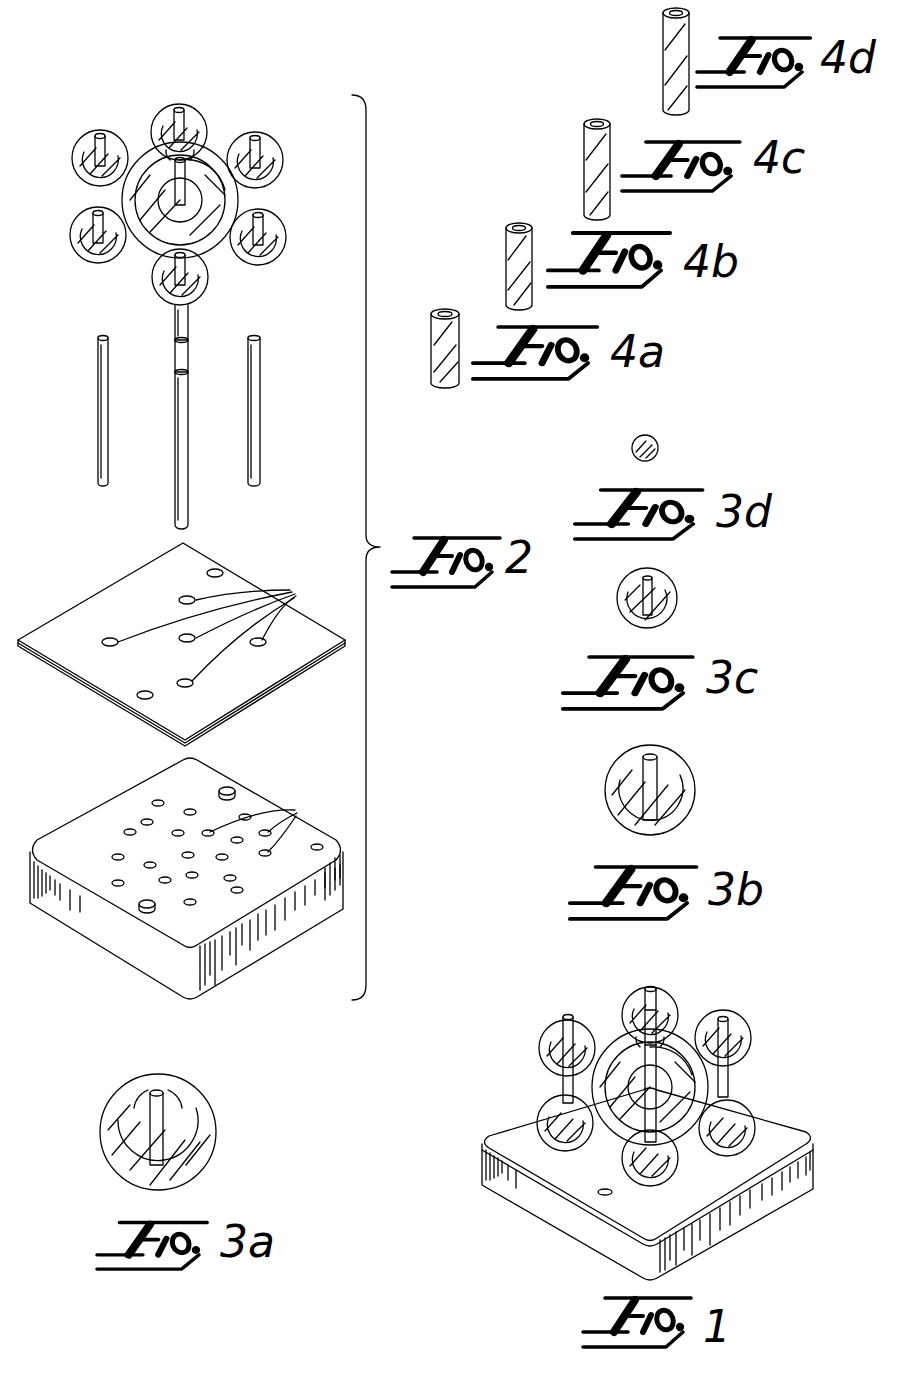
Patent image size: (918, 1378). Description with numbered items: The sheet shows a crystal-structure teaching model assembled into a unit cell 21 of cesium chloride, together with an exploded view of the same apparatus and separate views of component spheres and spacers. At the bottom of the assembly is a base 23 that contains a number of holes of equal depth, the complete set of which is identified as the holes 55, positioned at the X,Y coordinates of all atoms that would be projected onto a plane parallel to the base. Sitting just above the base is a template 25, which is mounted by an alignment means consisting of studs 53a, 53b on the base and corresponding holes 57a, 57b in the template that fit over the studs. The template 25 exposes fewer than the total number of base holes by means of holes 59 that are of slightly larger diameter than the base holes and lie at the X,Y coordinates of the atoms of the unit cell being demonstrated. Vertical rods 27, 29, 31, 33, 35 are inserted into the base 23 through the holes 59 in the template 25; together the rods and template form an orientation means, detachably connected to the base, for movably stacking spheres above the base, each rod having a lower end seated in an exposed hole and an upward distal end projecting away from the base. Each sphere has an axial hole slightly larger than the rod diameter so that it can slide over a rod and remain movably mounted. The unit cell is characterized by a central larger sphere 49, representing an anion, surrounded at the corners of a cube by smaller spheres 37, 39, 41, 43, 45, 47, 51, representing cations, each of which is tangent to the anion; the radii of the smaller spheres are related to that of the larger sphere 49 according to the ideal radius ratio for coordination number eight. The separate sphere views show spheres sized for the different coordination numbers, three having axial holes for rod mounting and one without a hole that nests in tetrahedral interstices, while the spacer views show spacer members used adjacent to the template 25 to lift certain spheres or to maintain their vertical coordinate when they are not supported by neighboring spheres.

In FIG. 1, the unit cell 21 is at (671, 1118).
In FIG. 2, the base 23 is at (272, 932).
In FIG. 1, the base 23 is at (745, 1203).
In FIG. 2, the template 25 is at (283, 680).
In FIG. 1, the template 25 is at (778, 1145).
In FIG. 2, the vertical rod 27 is at (262, 346).
In FIG. 1, the vertical rod 27 is at (728, 1020).
In FIG. 2, the vertical rod 29 is at (190, 320).
In FIG. 1, the vertical rod 29 is at (650, 992).
In FIG. 2, the vertical rod 31 is at (108, 420).
In FIG. 1, the vertical rod 31 is at (568, 1015).
In FIG. 2, the vertical rod 33 is at (190, 462).
In FIG. 1, the vertical rod 33 is at (702, 1085).
In FIG. 2, the vertical rod 35 is at (190, 356).
In FIG. 1, the vertical rod 35 is at (658, 1032).
In FIG. 2, the smaller sphere 37 is at (72, 158).
In FIG. 1, the smaller sphere 37 is at (540, 1046).
In FIG. 2, the smaller sphere 39 is at (78, 262).
In FIG. 1, the smaller sphere 39 is at (545, 1106).
In FIG. 2, the smaller sphere 41 is at (236, 206).
In FIG. 1, the smaller sphere 41 is at (600, 1082).
In FIG. 2, the smaller sphere 43 is at (205, 282).
In FIG. 1, the smaller sphere 43 is at (628, 1175).
In FIG. 2, the smaller sphere 45 is at (280, 250).
In FIG. 1, the smaller sphere 45 is at (757, 1130).
In FIG. 2, the smaller sphere 47 is at (272, 148).
In FIG. 1, the smaller sphere 47 is at (752, 1040).
In FIG. 2, the central larger sphere 49 is at (205, 162).
In FIG. 1, the central larger sphere 49 is at (690, 1072).
In FIG. 2, the smaller sphere 51 is at (190, 106).
In FIG. 1, the smaller sphere 51 is at (638, 995).
In FIG. 2, the stud 53a is at (232, 790).
In FIG. 2, the stud 53b is at (143, 908).
In FIG. 2, the holes in the base 55 is at (269, 824).
In FIG. 2, the hole in the template 57a is at (222, 572).
In FIG. 2, the hole in the template 57b is at (145, 700).
In FIG. 2, the holes in the template 59 is at (224, 629).